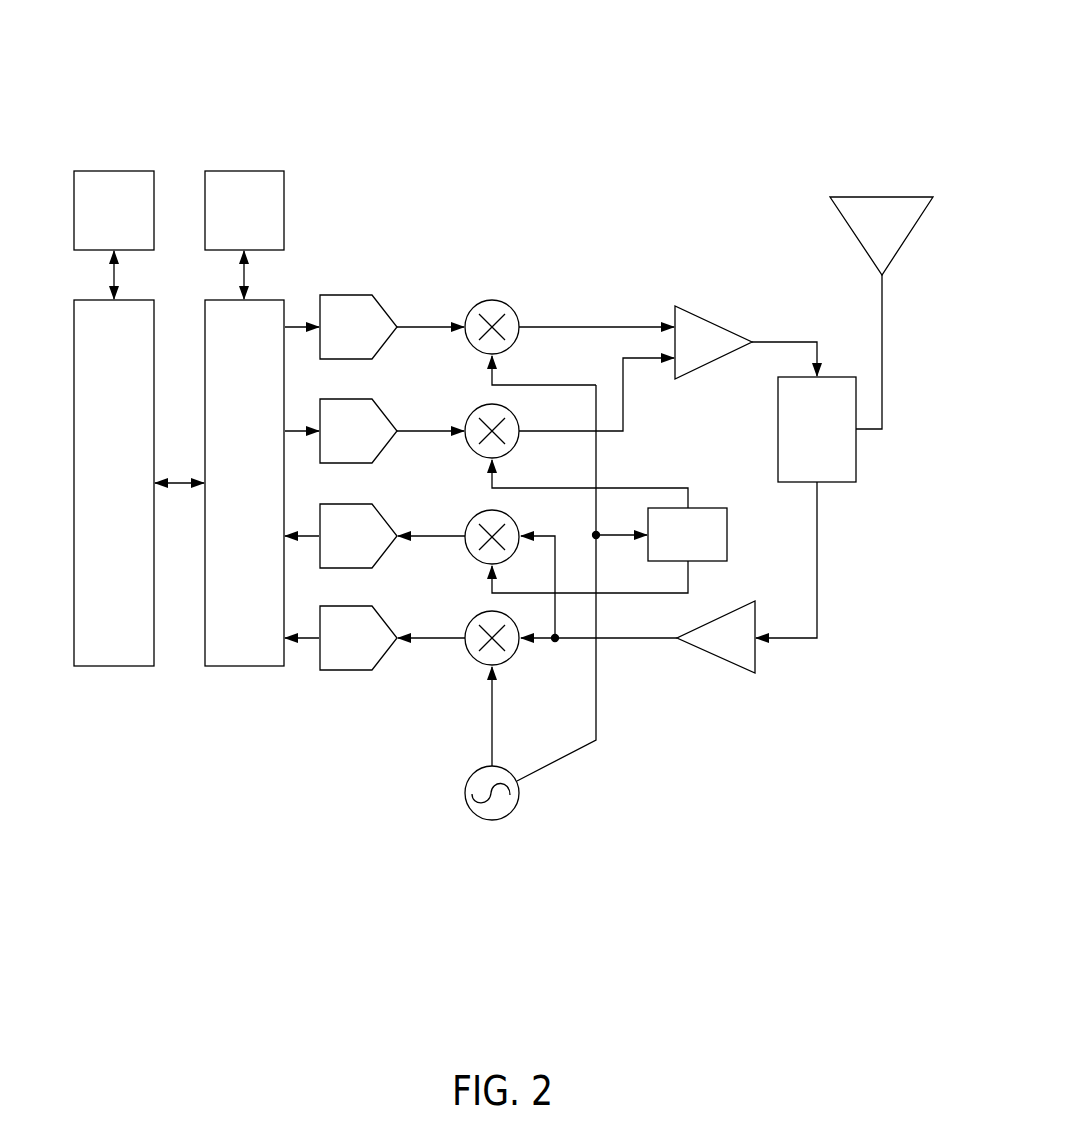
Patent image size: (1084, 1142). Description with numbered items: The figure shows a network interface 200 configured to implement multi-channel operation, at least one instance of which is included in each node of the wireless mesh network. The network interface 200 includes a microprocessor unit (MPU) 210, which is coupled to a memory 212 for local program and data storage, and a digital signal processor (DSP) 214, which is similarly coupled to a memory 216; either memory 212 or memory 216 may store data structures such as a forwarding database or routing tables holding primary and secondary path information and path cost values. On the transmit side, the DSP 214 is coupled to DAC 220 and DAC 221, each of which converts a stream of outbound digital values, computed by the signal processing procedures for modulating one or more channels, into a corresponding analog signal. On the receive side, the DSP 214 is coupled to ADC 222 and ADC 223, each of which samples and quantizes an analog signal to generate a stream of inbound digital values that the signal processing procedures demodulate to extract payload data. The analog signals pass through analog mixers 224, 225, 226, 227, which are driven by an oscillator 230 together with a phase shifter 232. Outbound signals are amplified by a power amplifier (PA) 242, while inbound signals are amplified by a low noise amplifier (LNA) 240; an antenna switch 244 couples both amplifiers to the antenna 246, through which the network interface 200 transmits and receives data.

The network interface 200 is at (661, 119).
The microprocessor unit (MPU) 210 is at (133, 508).
The memory 212 is at (132, 236).
The digital signal processor (DSP) 214 is at (263, 508).
The memory 216 is at (263, 236).
The digital to analog converter (DAC) 220 is at (367, 352).
The digital to analog converter (DAC) 221 is at (367, 455).
The analog to digital converter (ADC) 222 is at (367, 562).
The analog to digital converter (ADC) 223 is at (367, 663).
The analog mixer 224 is at (477, 303).
The analog mixer 225 is at (477, 408).
The analog mixer 226 is at (476, 513).
The analog mixer 227 is at (477, 614).
The oscillator 230 is at (470, 776).
The phase shifter 232 is at (708, 549).
The low noise amplifier (LNA) 240 is at (715, 656).
The power amplifier (PA) 242 is at (694, 313).
The antenna switch 244 is at (835, 446).
The antenna 246 is at (845, 226).